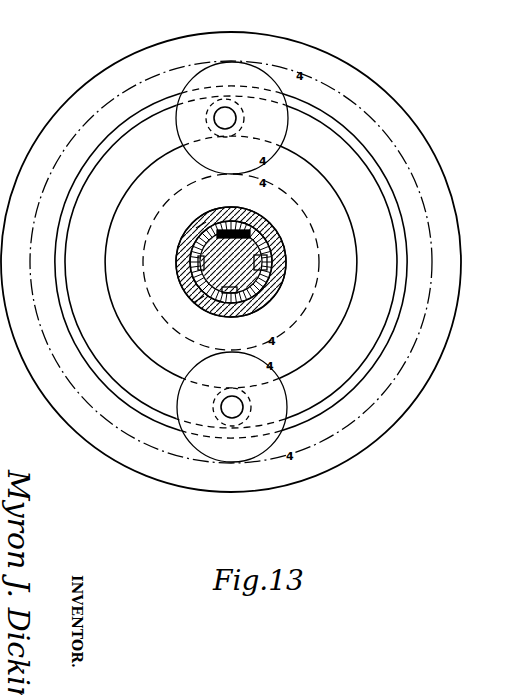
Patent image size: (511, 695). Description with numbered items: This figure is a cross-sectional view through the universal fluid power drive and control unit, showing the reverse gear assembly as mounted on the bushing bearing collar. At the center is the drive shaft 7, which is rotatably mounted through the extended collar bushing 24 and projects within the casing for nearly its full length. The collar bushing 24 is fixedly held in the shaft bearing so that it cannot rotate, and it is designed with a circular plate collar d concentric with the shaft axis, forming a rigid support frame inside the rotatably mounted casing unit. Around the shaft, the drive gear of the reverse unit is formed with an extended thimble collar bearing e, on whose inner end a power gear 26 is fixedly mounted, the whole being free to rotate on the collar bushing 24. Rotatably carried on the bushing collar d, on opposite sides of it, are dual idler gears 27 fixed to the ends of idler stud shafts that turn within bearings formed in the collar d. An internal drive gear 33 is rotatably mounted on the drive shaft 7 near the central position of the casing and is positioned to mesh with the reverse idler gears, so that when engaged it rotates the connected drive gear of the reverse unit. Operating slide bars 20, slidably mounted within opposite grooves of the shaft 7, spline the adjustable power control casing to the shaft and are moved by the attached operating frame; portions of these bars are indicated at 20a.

The internal drive gear 33 is at (378, 97).
The circular plate collar d is at (356, 138).
The idler gears 27 is at (276, 143).
The power gear 26 is at (289, 220).
The drive shaft 7 is at (273, 243).
The operating slide bars 20 is at (283, 257).
The sleeve segment 20a is at (195, 227).
The collar bushing 24 is at (260, 263).
The thimble collar bearing e is at (283, 277).